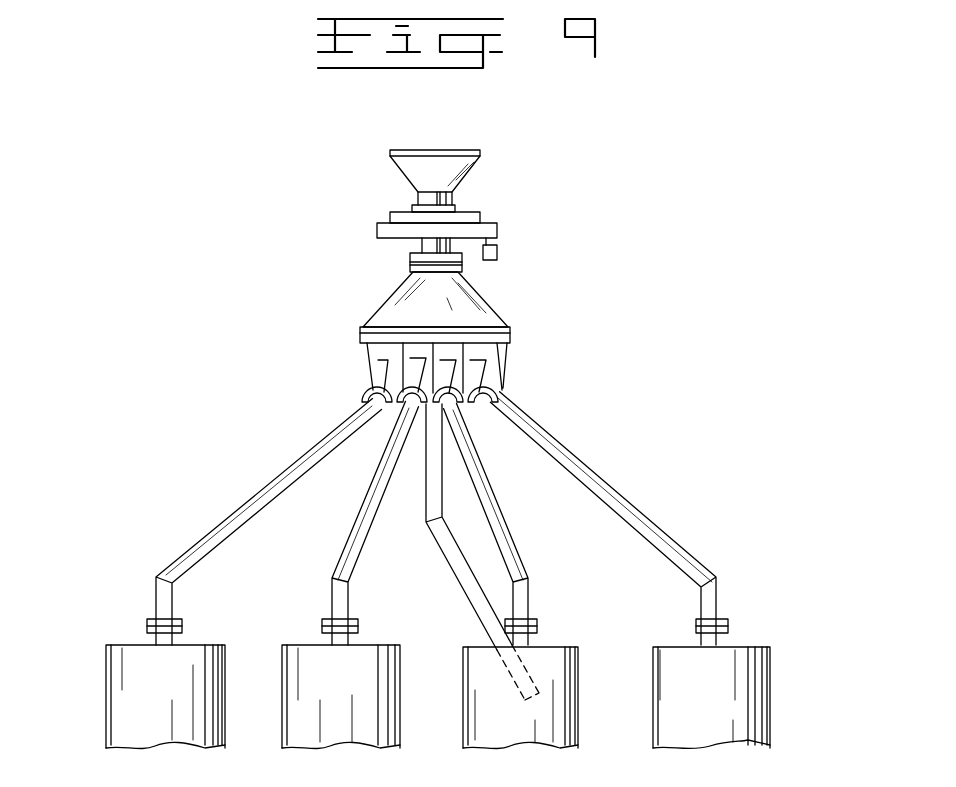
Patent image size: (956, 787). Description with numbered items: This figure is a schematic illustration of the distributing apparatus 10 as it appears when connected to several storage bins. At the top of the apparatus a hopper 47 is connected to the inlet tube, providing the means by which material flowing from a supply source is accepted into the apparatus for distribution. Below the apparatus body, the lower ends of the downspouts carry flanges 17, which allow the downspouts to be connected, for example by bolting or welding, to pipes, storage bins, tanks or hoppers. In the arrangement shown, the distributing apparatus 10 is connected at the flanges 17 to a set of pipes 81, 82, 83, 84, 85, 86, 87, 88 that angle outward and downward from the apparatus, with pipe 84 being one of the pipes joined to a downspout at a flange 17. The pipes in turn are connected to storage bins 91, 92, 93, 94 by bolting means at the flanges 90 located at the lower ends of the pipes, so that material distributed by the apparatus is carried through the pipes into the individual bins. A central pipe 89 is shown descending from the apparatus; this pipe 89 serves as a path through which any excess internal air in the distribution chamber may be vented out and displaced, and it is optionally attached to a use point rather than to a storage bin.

The distributing apparatus 10 is at (345, 247).
The flanges 17 is at (413, 390).
The hopper 47 is at (470, 170).
The pipe 81 is at (207, 540).
The pipe 82 is at (350, 545).
The pipe 83 is at (512, 553).
The pipe 84 is at (672, 545).
The pipe 85 is at (282, 470).
The pipe 86 is at (371, 477).
The pipe 87 is at (498, 490).
The pipe 88 is at (610, 488).
The pipe 89 is at (478, 600).
The flanges 90 is at (322, 626).
The storage bin 91 is at (125, 710).
The storage bin 92 is at (303, 710).
The storage bin 93 is at (547, 720).
The storage bin 94 is at (720, 717).